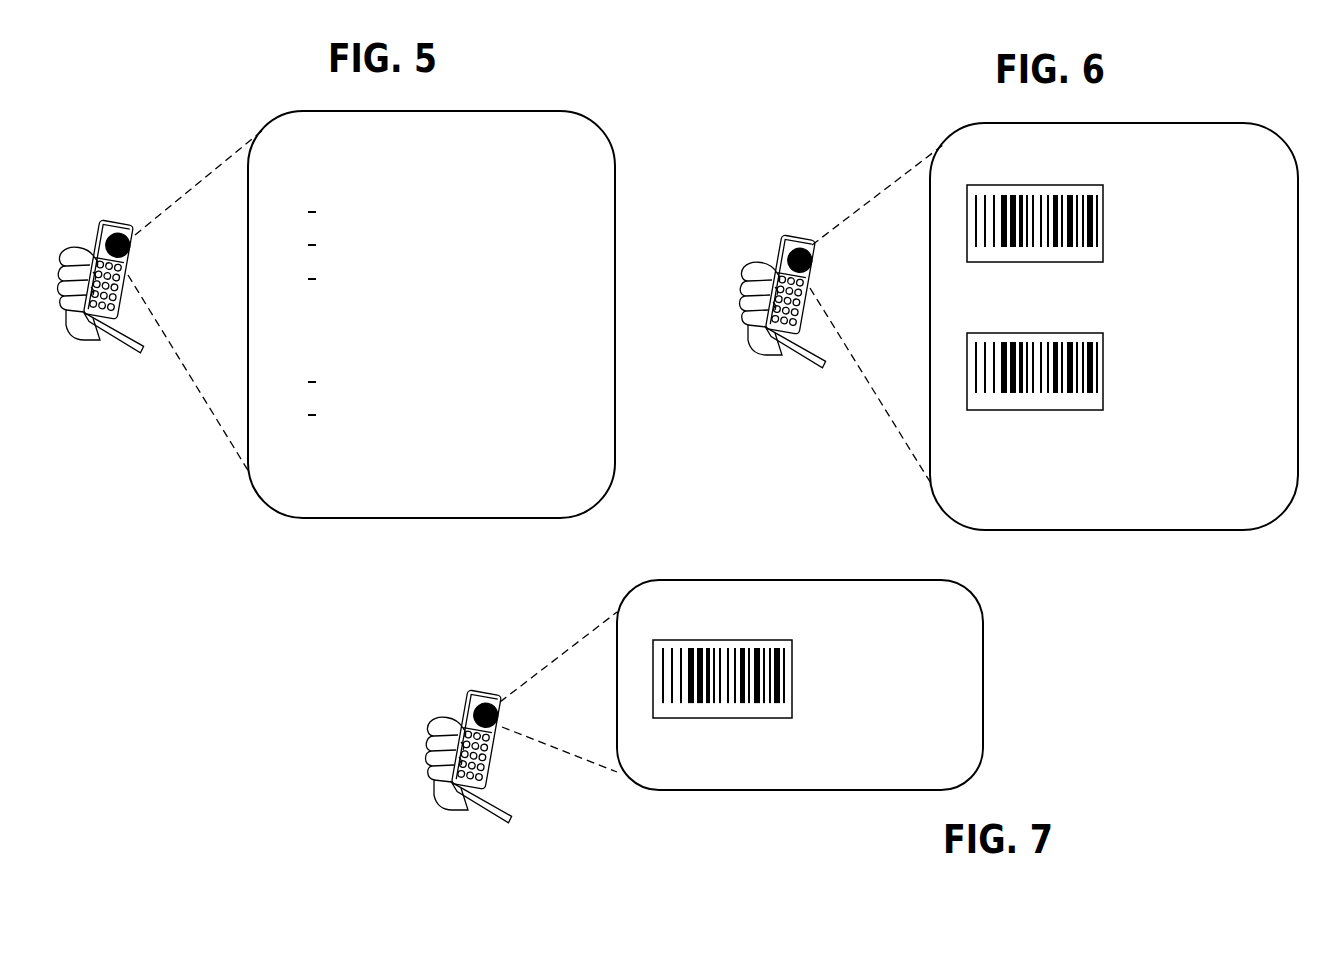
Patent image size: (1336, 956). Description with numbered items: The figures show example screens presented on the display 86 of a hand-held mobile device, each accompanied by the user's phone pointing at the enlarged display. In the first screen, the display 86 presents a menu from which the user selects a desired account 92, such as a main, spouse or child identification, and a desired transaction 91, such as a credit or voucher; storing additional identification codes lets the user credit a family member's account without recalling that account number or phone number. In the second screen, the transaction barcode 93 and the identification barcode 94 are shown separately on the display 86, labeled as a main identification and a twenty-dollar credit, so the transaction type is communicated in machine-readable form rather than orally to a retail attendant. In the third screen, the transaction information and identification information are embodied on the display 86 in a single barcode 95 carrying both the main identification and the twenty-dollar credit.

In FIG. 5, the mobile device display 86 is at (373, 529).
In FIG. 6, the mobile device display 86 is at (1216, 545).
In FIG. 7, the mobile device display 86 is at (714, 802).
In FIG. 5, the desired transaction 91 is at (543, 388).
In FIG. 5, the desired account 92 is at (578, 153).
In FIG. 6, the transaction barcode 93 is at (1067, 436).
In FIG. 6, the identification barcode 94 is at (1100, 164).
In FIG. 7, the single barcode 95 is at (741, 626).